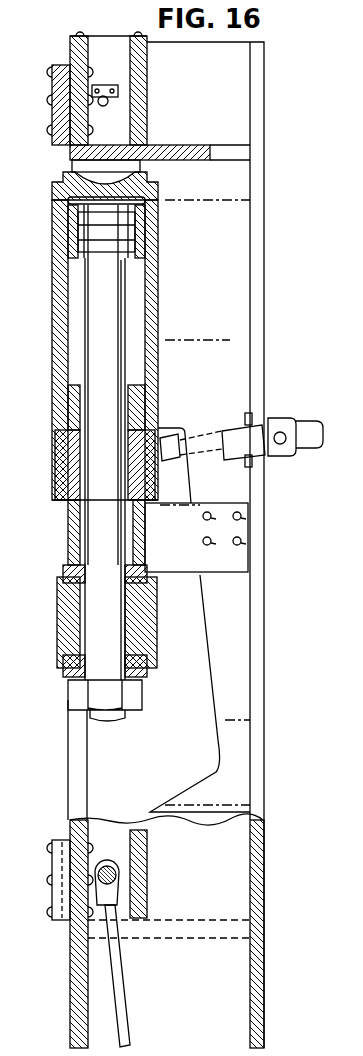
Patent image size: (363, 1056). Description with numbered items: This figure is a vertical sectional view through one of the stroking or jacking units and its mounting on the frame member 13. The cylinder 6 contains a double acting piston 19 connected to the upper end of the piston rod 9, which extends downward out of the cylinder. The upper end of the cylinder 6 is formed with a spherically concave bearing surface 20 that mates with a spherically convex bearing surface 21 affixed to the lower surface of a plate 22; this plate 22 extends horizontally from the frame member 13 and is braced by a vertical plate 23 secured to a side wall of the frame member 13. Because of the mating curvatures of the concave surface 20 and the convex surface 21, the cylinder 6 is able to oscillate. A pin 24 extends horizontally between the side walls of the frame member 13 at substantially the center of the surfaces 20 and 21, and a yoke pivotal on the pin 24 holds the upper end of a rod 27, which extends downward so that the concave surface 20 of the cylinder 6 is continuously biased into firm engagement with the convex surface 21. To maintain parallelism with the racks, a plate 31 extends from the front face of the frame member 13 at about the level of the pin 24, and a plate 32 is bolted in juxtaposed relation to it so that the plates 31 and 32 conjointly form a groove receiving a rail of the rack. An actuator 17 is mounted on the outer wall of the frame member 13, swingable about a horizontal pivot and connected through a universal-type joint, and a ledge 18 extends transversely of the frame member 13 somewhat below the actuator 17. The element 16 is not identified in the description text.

The cylinder 6 is at (158, 318).
The piston rod 9 is at (118, 641).
The frame member 13 is at (232, 963).
The lower bearing 16 is at (57, 618).
The actuator 17 is at (300, 420).
The ledge 18 is at (242, 537).
The double acting piston 19 is at (138, 230).
The spherically concave bearing surface 20 is at (128, 170).
The spherically convex bearing surface 21 is at (70, 182).
The plate 22 is at (203, 145).
The vertical plate 23 is at (148, 58).
The pin 24 is at (108, 103).
The rod 27 is at (130, 1032).
The plate 31 is at (70, 50).
The plate 32 is at (52, 118).